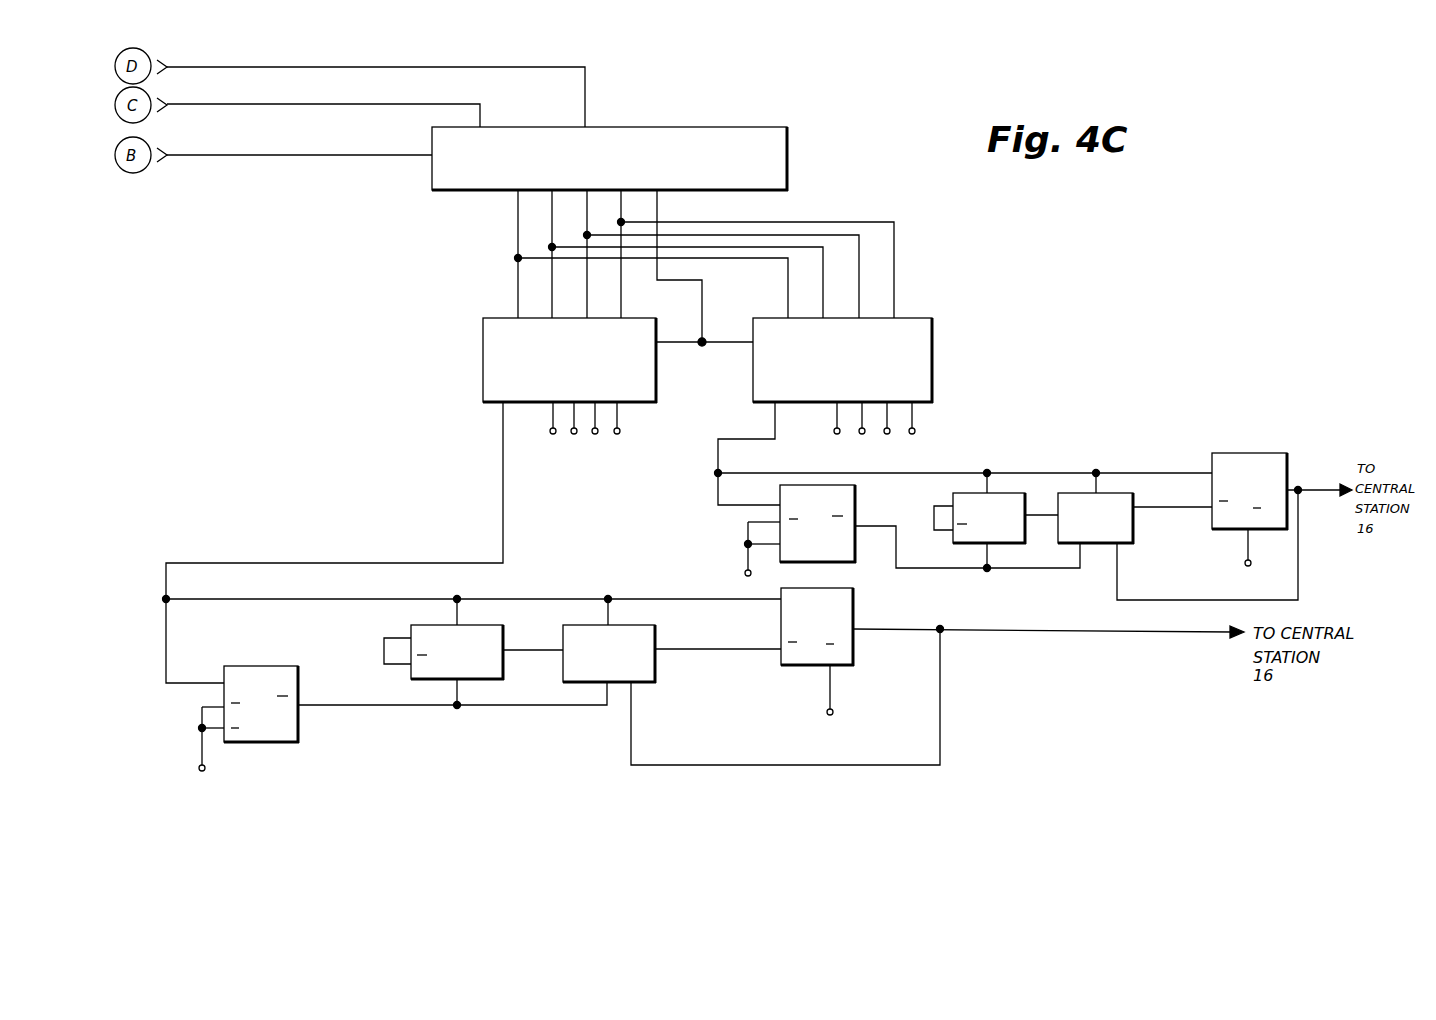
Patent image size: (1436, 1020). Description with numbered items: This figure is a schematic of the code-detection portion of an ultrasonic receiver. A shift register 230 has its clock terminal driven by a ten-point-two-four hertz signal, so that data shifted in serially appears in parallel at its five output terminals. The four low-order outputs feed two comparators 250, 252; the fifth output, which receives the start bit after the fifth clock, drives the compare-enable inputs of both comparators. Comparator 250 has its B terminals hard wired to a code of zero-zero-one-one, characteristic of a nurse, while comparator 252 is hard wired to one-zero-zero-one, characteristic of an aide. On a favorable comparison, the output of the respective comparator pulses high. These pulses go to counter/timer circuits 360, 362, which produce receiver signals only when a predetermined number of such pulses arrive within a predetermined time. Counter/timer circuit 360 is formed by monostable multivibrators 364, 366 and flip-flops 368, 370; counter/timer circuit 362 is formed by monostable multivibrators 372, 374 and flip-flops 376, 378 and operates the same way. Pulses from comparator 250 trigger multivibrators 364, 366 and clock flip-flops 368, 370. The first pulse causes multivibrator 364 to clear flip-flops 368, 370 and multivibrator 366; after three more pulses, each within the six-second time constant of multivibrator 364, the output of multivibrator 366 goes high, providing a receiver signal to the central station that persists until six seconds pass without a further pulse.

The shift register 230 is at (723, 123).
The comparator 250 is at (483, 363).
The comparator 252 is at (932, 362).
The counter/timer circuit 360 is at (472, 574).
The counter/timer circuit 362 is at (964, 441).
The monostable multivibrator 364 is at (260, 713).
The monostable multivibrator 366 is at (797, 664).
The flip-flop 368 is at (444, 674).
The flip-flop 370 is at (602, 674).
The monostable multivibrator 372 is at (845, 500).
The monostable multivibrator 374 is at (1290, 450).
The flip-flop 376 is at (977, 540).
The flip-flop 378 is at (1092, 540).